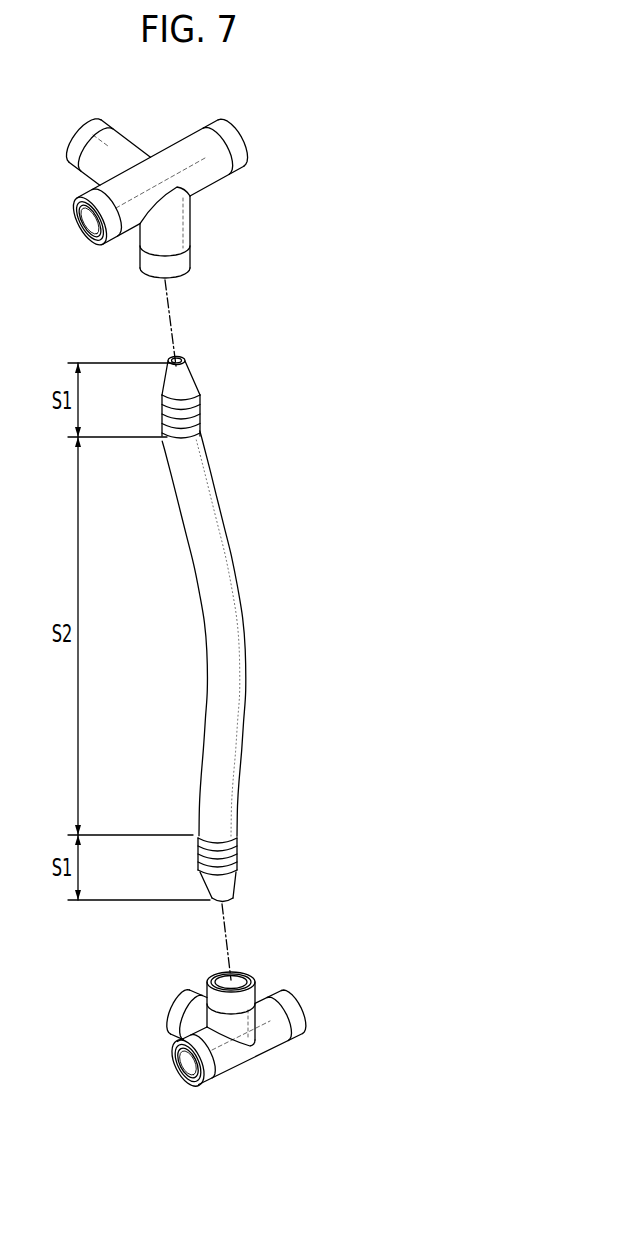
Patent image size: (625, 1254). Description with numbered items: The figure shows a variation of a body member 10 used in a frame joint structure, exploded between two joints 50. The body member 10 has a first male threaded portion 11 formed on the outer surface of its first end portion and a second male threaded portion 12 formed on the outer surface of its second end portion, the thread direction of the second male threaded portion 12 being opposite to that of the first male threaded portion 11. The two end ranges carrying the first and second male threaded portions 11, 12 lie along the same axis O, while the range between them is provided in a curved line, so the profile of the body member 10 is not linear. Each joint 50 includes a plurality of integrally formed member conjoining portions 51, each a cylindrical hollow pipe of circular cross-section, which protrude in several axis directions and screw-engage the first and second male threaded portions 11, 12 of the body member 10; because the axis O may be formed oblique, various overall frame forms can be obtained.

The body member 10 is at (258, 633).
The first male threaded portion 11 is at (199, 407).
The second male threaded portion 12 is at (238, 850).
The joint 50 is at (210, 188).
The member conjoining portion 51 is at (190, 223).
The axis O is at (176, 337).